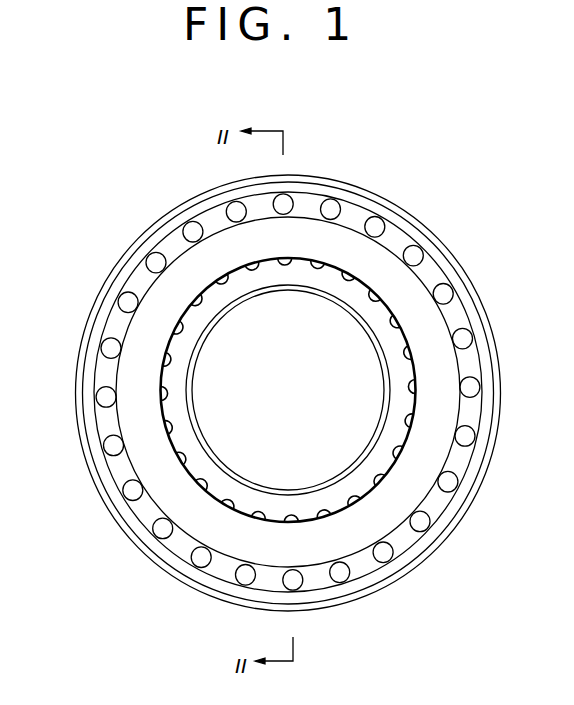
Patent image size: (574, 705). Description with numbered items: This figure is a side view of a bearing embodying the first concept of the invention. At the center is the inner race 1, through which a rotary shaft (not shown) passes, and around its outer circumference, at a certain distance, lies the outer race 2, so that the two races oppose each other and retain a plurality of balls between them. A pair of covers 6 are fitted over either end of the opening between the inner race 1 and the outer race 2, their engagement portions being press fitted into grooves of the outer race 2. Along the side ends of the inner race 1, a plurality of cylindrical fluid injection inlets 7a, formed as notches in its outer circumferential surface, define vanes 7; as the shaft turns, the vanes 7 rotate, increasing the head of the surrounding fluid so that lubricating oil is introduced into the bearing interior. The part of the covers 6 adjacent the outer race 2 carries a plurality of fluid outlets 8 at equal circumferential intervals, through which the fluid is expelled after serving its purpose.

The inner race 1 is at (232, 290).
The outer race 2 is at (178, 213).
The covers 6 is at (387, 263).
The vanes 7 is at (333, 495).
The fluid injection inlets 7a is at (393, 320).
The fluid outlets 8 is at (110, 343).